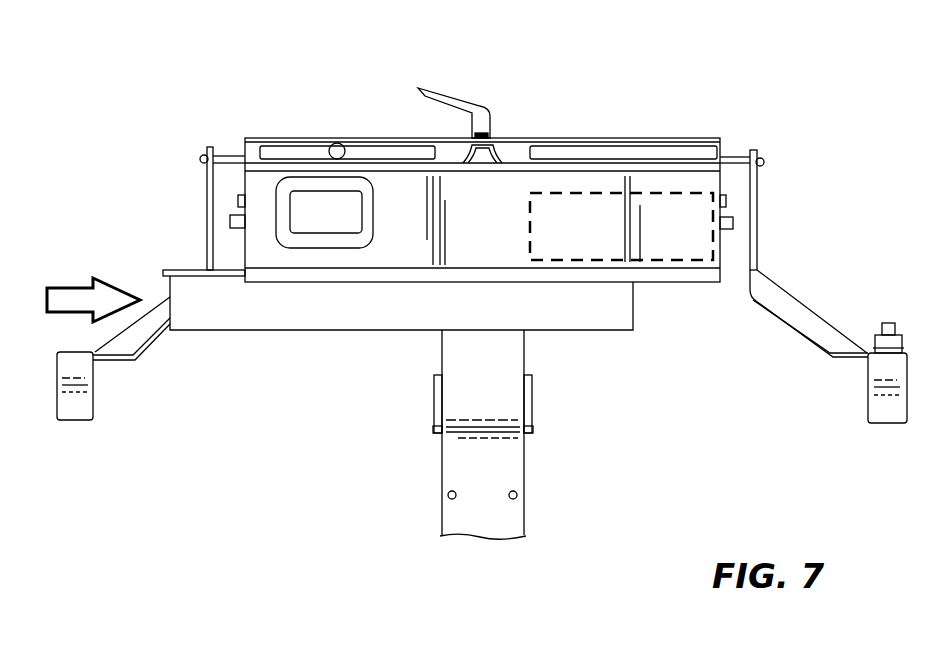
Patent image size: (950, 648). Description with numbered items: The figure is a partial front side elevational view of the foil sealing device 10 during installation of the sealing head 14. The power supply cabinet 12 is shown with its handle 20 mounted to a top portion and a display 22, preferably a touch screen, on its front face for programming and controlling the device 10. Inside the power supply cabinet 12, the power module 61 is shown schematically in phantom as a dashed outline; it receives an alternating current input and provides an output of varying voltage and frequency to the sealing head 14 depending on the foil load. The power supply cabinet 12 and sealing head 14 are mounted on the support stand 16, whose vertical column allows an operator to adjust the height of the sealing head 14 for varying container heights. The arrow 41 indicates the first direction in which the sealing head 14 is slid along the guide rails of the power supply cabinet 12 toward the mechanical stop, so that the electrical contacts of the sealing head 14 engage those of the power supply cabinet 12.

The foil sealing device 10 is at (704, 53).
The power supply cabinet 12 is at (581, 178).
The sealing head 14 is at (553, 322).
The support stand 16 is at (386, 371).
The handle 20 is at (450, 93).
The display 22 is at (297, 220).
The arrow 41 is at (82, 293).
The power module 61 is at (665, 262).